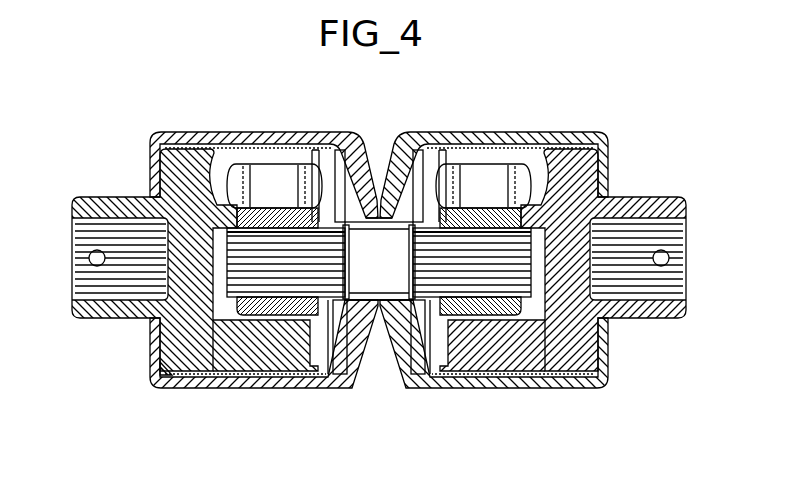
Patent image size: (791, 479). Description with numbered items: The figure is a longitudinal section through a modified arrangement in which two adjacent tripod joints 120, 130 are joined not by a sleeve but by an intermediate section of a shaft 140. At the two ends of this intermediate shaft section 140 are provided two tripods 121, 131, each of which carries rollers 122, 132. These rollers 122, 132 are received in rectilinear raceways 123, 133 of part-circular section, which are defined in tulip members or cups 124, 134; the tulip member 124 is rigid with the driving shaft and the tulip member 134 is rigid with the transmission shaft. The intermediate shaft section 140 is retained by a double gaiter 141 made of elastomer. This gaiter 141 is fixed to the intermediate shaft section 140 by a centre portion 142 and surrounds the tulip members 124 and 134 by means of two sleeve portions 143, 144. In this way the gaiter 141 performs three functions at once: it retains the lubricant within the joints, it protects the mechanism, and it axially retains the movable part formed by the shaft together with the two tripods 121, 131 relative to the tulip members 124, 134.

The tripod joint 120 is at (537, 388).
The tripod 121 is at (482, 222).
The roller 122 is at (468, 180).
The rectilinear raceway 123 is at (552, 191).
The tulip member 124 is at (478, 356).
The tripod joint 130 is at (223, 388).
The tripod 131 is at (278, 222).
The roller 132 is at (234, 163).
The rectilinear raceway 133 is at (212, 181).
The tulip member 134 is at (157, 388).
The intermediate shaft section 140 is at (391, 269).
The double gaiter 141 is at (340, 389).
The centre portion 142 is at (366, 323).
The sleeve portion 143 is at (537, 141).
The sleeve portion 144 is at (292, 148).